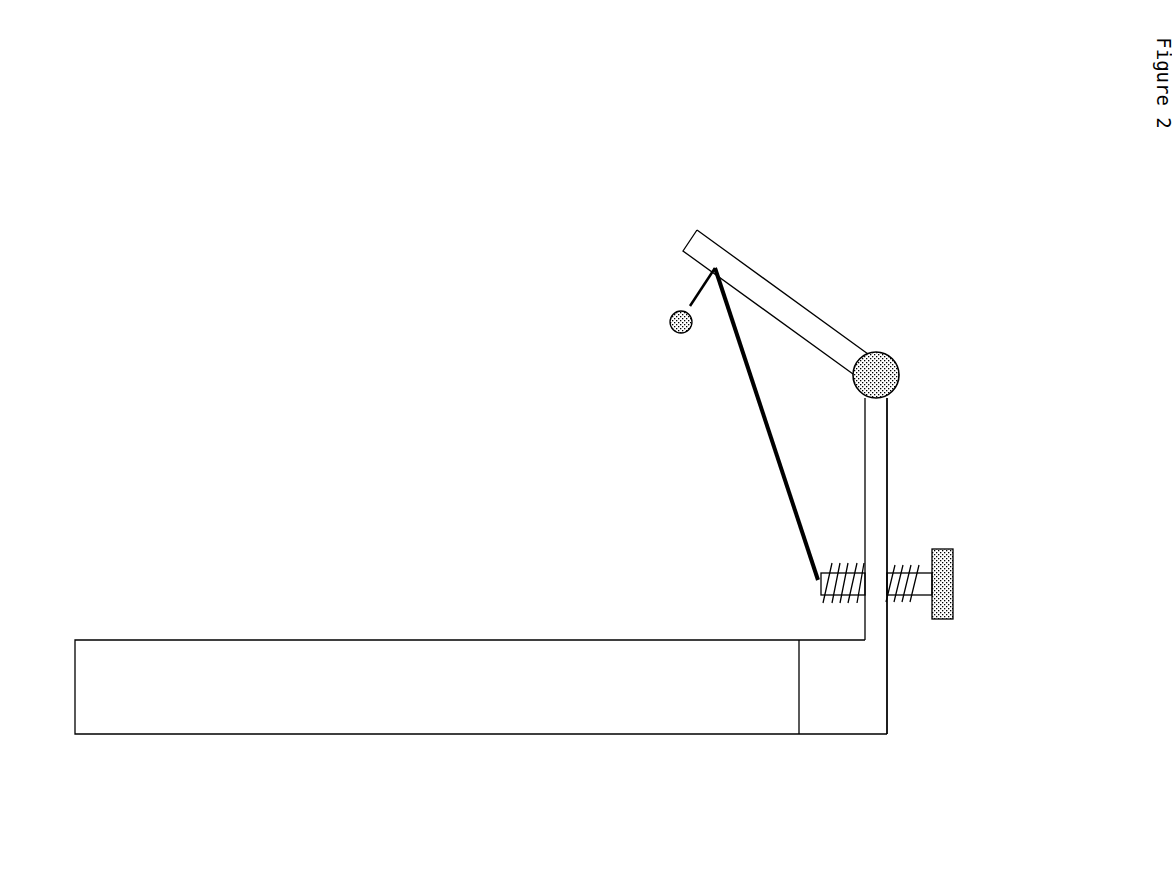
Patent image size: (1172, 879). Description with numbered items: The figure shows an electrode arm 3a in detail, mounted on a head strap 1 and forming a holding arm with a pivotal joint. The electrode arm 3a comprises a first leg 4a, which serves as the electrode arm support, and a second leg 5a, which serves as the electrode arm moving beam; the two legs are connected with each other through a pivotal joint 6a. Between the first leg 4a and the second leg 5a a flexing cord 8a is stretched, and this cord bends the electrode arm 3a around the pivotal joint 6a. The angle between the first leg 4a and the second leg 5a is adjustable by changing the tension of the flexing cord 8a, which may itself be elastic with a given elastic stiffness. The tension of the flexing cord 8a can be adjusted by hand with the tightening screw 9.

The head strap 1 is at (450, 727).
The electrode arm 3a is at (882, 430).
The first leg 4a is at (891, 478).
The second leg 5a is at (758, 280).
The pivotal joint 6a is at (884, 370).
The flexing cord 8a is at (757, 412).
The tightening screw 9 is at (948, 548).